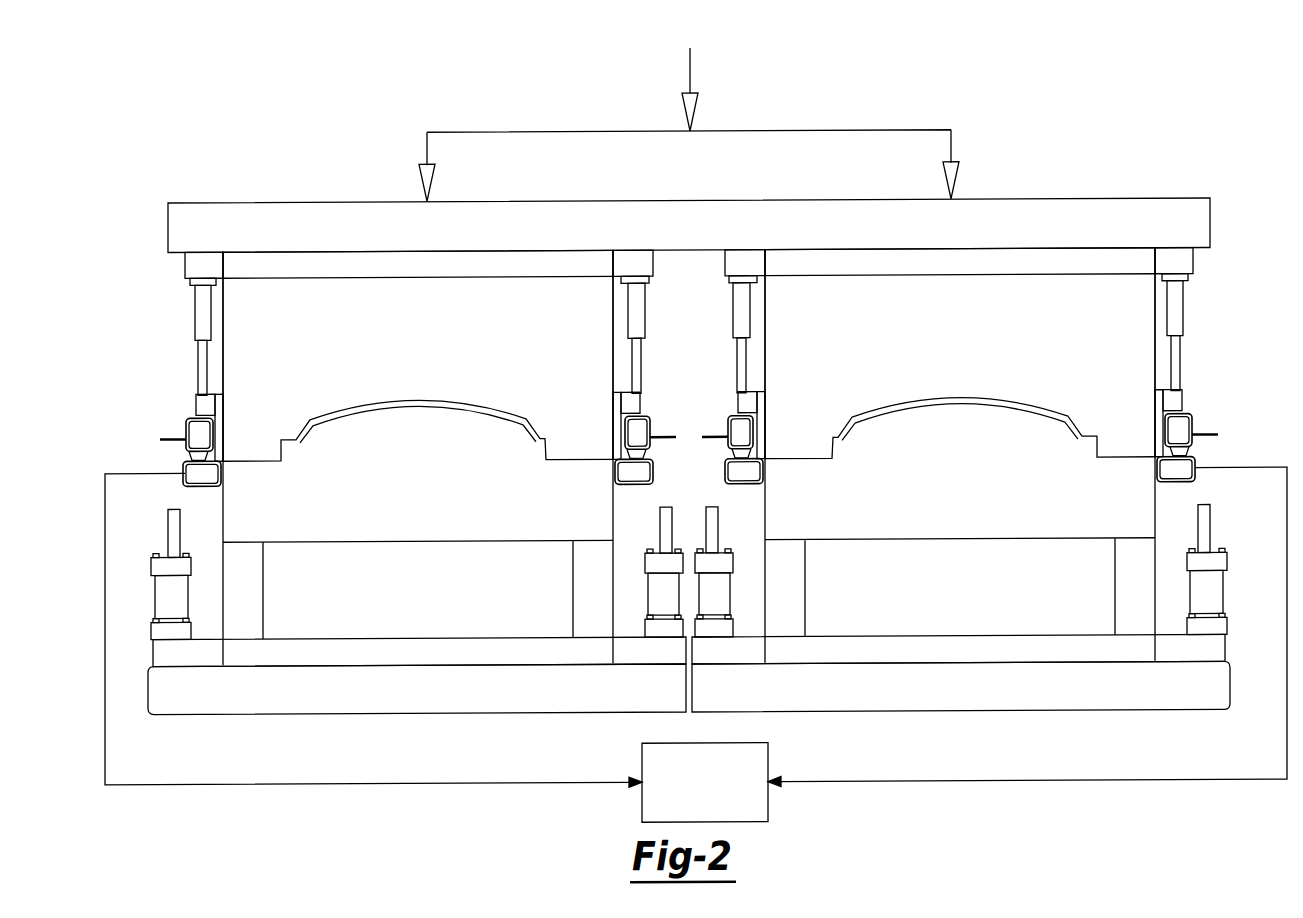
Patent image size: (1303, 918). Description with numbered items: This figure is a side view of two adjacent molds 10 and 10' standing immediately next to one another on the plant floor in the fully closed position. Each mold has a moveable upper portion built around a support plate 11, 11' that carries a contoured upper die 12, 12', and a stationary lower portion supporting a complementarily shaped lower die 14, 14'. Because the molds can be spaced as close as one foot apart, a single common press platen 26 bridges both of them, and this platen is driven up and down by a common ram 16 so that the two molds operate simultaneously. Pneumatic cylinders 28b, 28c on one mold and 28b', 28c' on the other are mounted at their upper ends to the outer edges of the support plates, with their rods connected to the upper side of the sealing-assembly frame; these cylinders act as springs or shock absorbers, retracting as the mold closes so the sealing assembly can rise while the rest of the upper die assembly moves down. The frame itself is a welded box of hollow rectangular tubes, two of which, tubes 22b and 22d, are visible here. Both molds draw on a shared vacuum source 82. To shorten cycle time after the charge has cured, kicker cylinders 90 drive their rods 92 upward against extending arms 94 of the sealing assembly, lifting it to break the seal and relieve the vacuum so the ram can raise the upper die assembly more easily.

The mold 10 is at (961, 417).
The mold 10' is at (417, 423).
The support plate 11 is at (960, 259).
The support plate 11' is at (418, 261).
The upper die 12 is at (960, 366).
The upper die 12' is at (418, 368).
The lower die 14 is at (960, 517).
The lower die 14' is at (418, 519).
The ram 16 is at (690, 82).
The press platen 26 is at (1203, 227).
The pneumatic cylinder 28b is at (712, 322).
The pneumatic cylinder 28b' is at (172, 323).
The pneumatic cylinder 28c is at (1214, 319).
The pneumatic cylinder 28c' is at (664, 321).
The hollow rectangular tube 22b is at (1193, 432).
The hollow rectangular tube 22d is at (728, 430).
The vacuum source 82 is at (768, 760).
The kicker cylinder 90 is at (1213, 597).
The rod 92 is at (1210, 537).
The extending arm 94 is at (1218, 437).